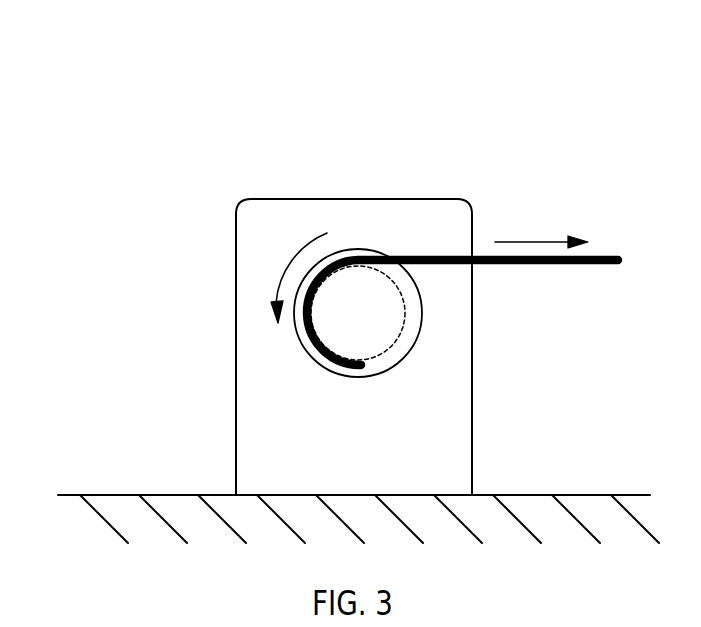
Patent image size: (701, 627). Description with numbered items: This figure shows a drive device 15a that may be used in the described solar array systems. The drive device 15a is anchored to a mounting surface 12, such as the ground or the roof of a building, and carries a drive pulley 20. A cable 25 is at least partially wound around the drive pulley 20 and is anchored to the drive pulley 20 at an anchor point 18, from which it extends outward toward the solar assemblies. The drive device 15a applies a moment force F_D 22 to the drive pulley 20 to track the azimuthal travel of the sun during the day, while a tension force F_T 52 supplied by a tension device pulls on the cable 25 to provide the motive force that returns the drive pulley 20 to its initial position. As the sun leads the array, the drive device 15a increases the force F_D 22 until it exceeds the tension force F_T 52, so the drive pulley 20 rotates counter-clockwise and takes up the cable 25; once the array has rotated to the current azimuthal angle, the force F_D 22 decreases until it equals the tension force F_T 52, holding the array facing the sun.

The drive device 15a is at (499, 80).
The mounting surface 12 is at (73, 495).
The drive pulley 20 is at (415, 343).
The anchor point 18 is at (361, 364).
The cable 25 is at (520, 263).
The tension force F_T 52 is at (515, 241).
The force F_D 22 is at (302, 248).